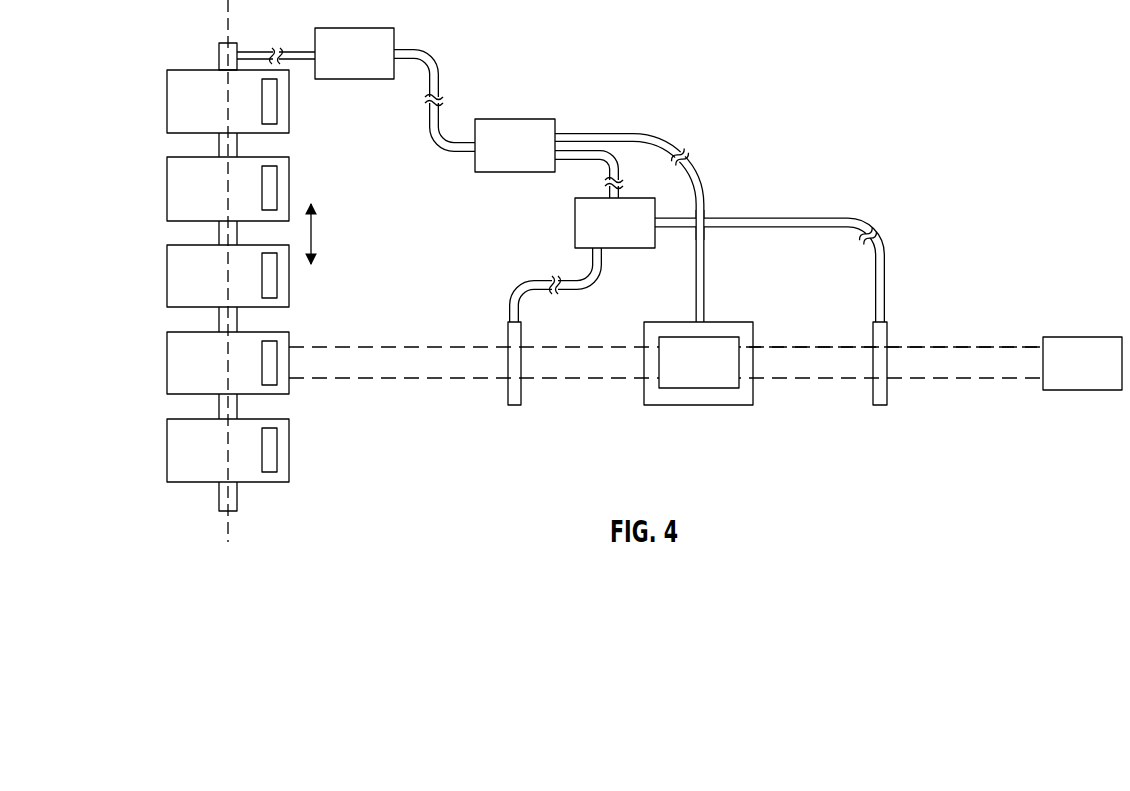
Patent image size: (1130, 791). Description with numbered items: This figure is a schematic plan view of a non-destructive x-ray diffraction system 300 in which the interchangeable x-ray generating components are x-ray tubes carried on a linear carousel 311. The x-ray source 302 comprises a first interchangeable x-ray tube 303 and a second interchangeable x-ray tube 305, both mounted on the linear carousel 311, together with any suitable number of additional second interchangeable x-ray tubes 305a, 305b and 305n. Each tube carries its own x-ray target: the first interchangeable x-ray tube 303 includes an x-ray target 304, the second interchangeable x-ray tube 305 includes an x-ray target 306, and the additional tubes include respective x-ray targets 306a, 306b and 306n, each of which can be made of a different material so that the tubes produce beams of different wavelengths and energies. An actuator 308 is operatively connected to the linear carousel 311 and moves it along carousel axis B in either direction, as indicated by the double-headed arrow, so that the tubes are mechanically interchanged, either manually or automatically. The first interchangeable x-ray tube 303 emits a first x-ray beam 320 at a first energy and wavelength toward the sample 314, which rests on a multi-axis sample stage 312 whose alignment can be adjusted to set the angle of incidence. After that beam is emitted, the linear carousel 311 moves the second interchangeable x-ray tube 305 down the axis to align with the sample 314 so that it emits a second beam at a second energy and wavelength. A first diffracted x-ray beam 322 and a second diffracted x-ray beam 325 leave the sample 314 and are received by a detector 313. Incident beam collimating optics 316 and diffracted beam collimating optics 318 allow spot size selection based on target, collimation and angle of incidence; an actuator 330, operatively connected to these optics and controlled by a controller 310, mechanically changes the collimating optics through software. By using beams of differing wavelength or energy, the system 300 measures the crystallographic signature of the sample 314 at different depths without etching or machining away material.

The x-ray diffraction system 300 is at (730, 41).
The x-ray source 302 is at (150, 363).
The first interchangeable x-ray tube 303 is at (289, 386).
The x-ray target 304 is at (270, 363).
The second interchangeable x-ray tube 305 is at (167, 276).
The second interchangeable x-ray tube 305a is at (167, 190).
The second interchangeable x-ray tube 305b is at (167, 102).
The second interchangeable x-ray tube 305n is at (167, 450).
The x-ray target 306 is at (270, 275).
The x-ray target 306a is at (270, 190).
The x-ray target 306b is at (268, 102).
The x-ray target 306n is at (270, 450).
The actuator 308 is at (335, 65).
The controller 310 is at (496, 157).
The linear carousel 311 is at (238, 495).
The multi-axis sample stage 312 is at (753, 392).
The detector 313 is at (1063, 375).
The sample 314 is at (680, 375).
The incident beam collimating optics 316 is at (510, 320).
The diffracted beam collimating optics 318 is at (886, 322).
The first x-ray beam 320 is at (418, 347).
The first diffracted x-ray beam 322 is at (977, 347).
The second diffracted x-ray beam 325 is at (977, 380).
The actuator 330 is at (596, 235).